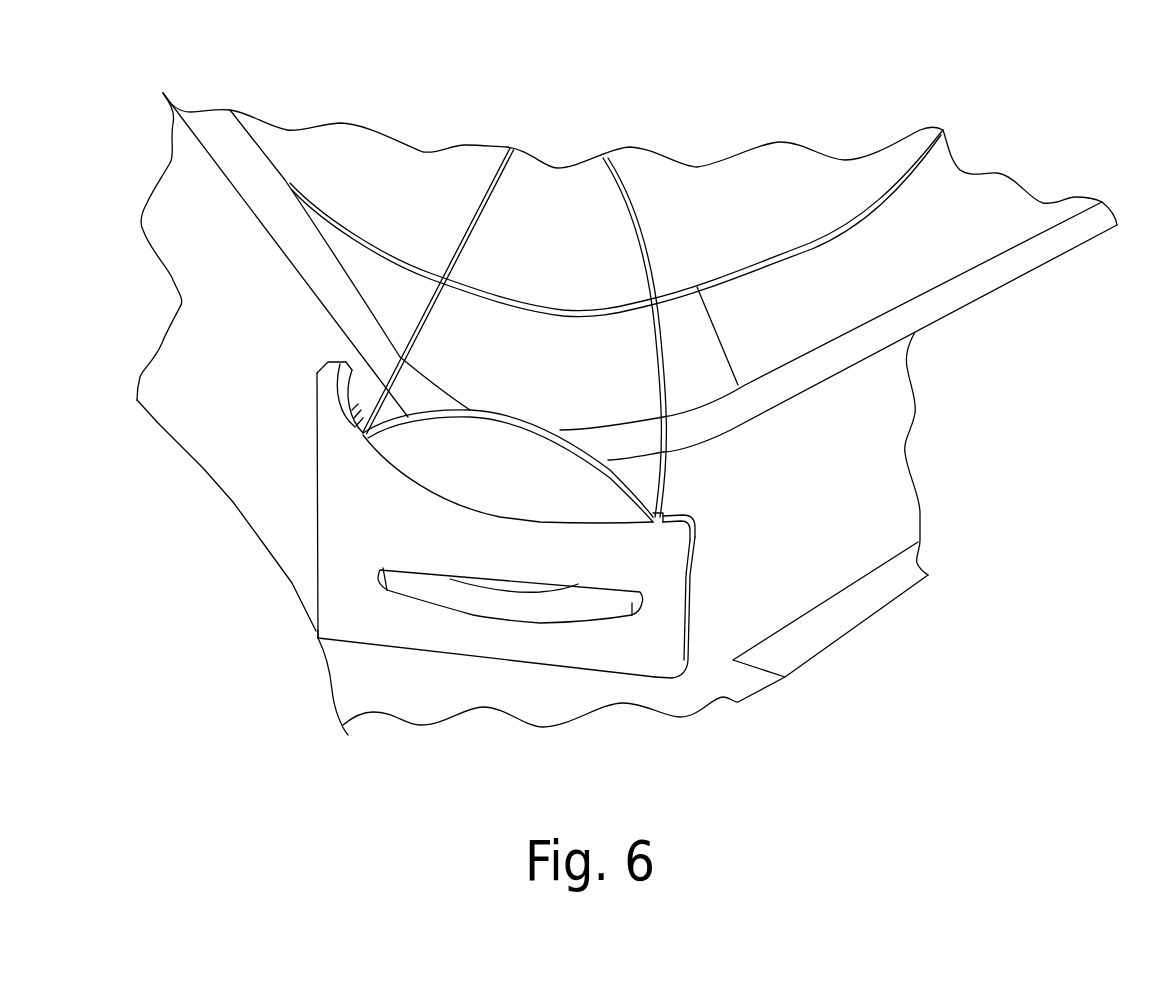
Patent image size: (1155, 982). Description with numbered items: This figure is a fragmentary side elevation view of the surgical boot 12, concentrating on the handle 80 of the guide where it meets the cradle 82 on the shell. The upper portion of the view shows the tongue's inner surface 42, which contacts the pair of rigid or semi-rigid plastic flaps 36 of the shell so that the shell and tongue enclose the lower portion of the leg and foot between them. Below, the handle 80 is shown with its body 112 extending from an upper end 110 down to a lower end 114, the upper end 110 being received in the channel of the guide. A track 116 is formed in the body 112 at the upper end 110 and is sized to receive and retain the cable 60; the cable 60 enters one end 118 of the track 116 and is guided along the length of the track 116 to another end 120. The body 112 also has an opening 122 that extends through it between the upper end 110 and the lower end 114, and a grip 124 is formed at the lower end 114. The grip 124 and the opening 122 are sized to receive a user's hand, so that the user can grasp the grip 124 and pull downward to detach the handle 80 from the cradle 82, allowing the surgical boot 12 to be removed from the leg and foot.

The surgical boot 12 is at (1033, 132).
The inner surface 42 is at (957, 170).
The plastic flaps 36 is at (702, 343).
The cable 60 is at (640, 237).
The track 116 is at (362, 405).
The another end of track 120 is at (388, 392).
The handle 80 is at (513, 571).
The cradle 82 is at (443, 492).
The upper end of handle 110 is at (676, 513).
The body of handle 112 is at (317, 377).
The lower end of handle 114 is at (331, 628).
The one end of track 118 is at (658, 527).
The opening 122 is at (570, 602).
The grip 124 is at (460, 640).